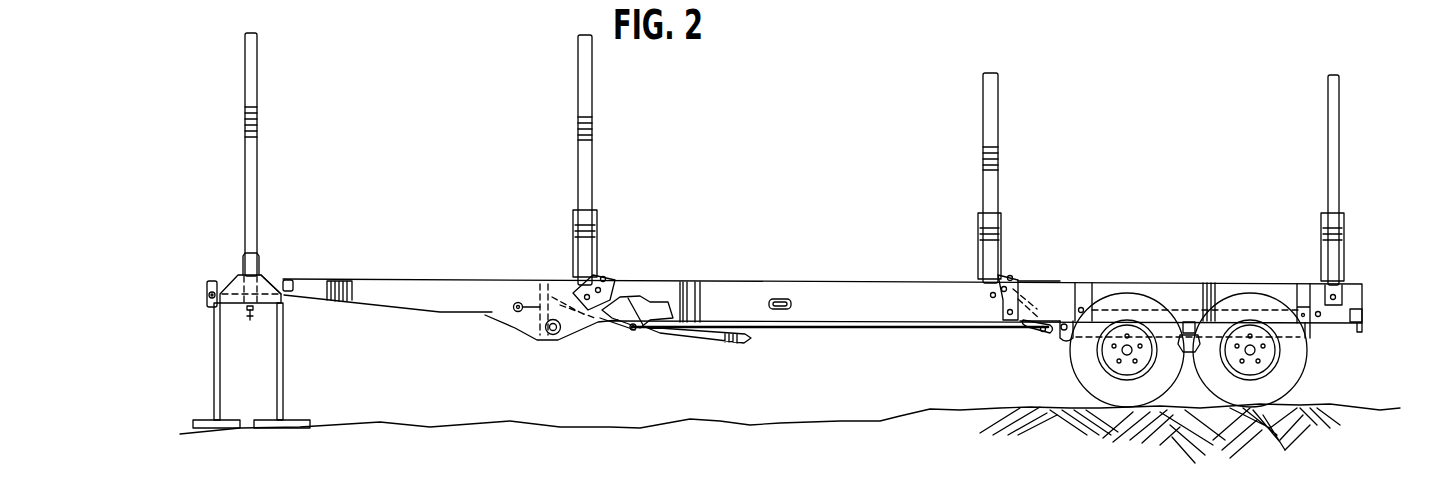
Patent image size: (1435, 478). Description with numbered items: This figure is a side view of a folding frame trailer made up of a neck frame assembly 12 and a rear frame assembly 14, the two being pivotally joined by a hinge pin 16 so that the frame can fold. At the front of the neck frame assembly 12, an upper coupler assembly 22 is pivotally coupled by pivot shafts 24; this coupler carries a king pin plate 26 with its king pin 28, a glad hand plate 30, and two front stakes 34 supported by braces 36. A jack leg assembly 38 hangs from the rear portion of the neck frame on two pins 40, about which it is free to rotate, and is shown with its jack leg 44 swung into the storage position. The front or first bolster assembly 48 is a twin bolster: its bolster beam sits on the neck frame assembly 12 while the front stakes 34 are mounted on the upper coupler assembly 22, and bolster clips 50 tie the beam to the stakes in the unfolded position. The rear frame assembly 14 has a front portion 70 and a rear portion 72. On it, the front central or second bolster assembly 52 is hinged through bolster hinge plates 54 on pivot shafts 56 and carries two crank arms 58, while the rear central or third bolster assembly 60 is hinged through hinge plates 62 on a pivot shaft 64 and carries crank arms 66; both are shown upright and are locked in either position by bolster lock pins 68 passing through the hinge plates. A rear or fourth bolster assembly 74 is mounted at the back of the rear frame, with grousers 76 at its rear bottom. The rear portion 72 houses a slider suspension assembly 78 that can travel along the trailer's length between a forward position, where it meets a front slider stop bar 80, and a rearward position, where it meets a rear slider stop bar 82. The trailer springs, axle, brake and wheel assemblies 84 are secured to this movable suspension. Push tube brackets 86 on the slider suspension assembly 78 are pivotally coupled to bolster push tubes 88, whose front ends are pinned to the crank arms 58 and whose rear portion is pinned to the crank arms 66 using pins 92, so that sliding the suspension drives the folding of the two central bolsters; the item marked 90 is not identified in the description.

The neck frame assembly 12 is at (428, 104).
The rear frame assembly 14 is at (815, 104).
The hinge pin 16 is at (558, 338).
The upper coupler assembly 22 is at (193, 275).
The pivot shafts 24 is at (236, 276).
The king pin plate 26 is at (233, 306).
The king pin 28 is at (251, 321).
The glad hand plate 30 is at (208, 295).
The front stakes 34 is at (258, 85).
The braces 36 is at (264, 288).
The jack leg assembly 38 is at (685, 355).
The pins 40 is at (516, 312).
The jack leg 44 is at (727, 345).
The first bolster assembly 48 is at (274, 186).
The bolster clips 50 is at (238, 274).
The second bolster assembly 52 is at (592, 160).
The bolster hinge plates 54 is at (600, 250).
The pivot shafts 56 is at (641, 302).
The crank arms 58 is at (628, 334).
The third bolster assembly 60 is at (999, 158).
The hinge plates 62 is at (1005, 262).
The pivot shaft 64 is at (1022, 292).
The crank arms 66 is at (1040, 331).
The bolster lock pins 68 is at (609, 272).
The front portion 70 is at (786, 184).
The rear portion 72 is at (1165, 219).
The fourth bolster assembly 74 is at (1289, 149).
The grousers 76 is at (1364, 329).
The slider suspension assembly 78 is at (1316, 347).
The front slider stop bar 80 is at (987, 301).
The rear slider stop bar 82 is at (1321, 320).
The trailer springs, axle, brake and wheel assemblies 84 is at (1010, 408).
The push tube brackets 86 is at (1062, 320).
The bolster push tubes 88 is at (910, 331).
The axle bracket 90 is at (1053, 379).
The pins 92 is at (625, 325).